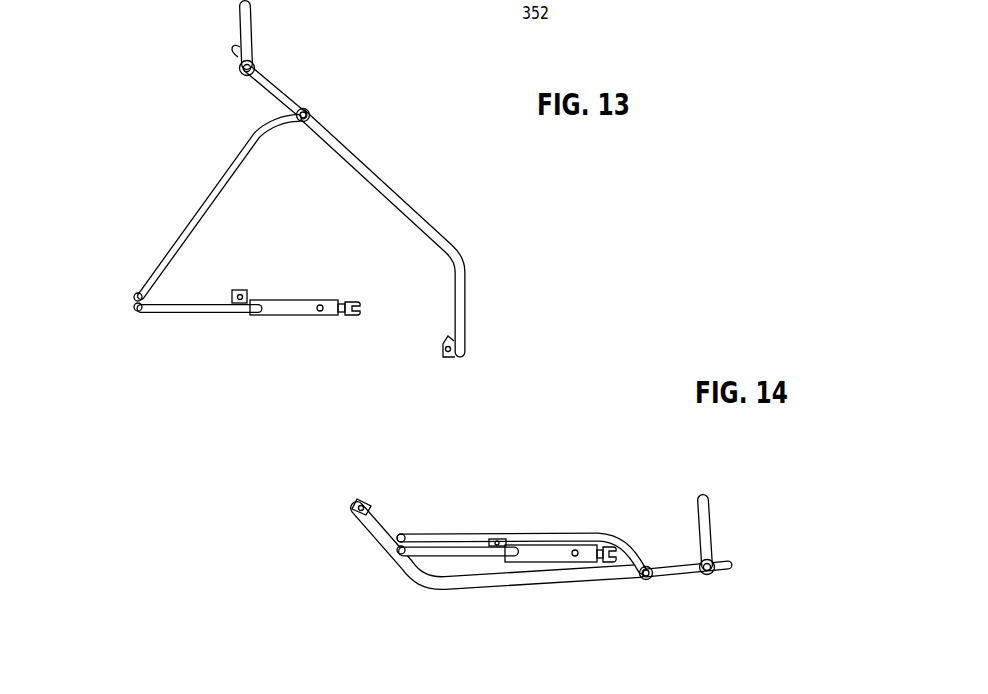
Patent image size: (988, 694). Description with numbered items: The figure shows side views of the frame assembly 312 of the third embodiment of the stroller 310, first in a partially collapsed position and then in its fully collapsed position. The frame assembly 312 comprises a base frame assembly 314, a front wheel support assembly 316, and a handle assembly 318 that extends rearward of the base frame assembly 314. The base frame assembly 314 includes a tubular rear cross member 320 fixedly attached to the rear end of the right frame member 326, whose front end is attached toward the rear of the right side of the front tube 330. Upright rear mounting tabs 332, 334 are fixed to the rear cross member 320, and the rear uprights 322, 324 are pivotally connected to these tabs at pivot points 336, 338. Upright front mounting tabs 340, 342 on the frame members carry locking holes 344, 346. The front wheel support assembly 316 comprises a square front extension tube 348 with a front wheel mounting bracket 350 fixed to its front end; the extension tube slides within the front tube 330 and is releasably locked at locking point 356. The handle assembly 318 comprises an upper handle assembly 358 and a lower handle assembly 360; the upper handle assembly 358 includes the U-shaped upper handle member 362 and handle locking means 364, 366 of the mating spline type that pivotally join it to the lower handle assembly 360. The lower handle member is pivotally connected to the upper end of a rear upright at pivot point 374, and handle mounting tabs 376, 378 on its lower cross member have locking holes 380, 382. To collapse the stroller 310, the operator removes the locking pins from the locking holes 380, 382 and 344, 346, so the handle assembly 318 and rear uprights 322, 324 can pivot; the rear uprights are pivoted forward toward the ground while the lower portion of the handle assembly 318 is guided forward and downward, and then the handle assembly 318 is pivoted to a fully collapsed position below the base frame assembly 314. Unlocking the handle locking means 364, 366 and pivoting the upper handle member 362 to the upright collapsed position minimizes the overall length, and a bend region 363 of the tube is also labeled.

In FIG. 13, the stroller 310 is at (553, 243).
In FIG. 13, the frame assembly 312 is at (401, 233).
In FIG. 14, the frame assembly 312 is at (498, 589).
In FIG. 13, the base frame assembly 314 is at (199, 375).
In FIG. 14, the base frame assembly 314 is at (475, 559).
In FIG. 14, the front wheel support assembly 316 is at (773, 512).
In FIG. 13, the handle assembly 318 is at (293, 90).
In FIG. 14, the handle assembly 318 is at (673, 583).
In FIG. 13, the rear cross member 320 is at (138, 311).
In FIG. 13, the rear upright 322 is at (219, 203).
In FIG. 14, the rear upright 322 is at (521, 526).
In FIG. 13, the rear upright 324 is at (233, 150).
In FIG. 14, the rear upright 324 is at (547, 536).
In FIG. 13, the right frame member 326 is at (163, 315).
In FIG. 13, the front tube 330 is at (308, 351).
In FIG. 13, the rear mounting tab 332 is at (128, 310).
In FIG. 14, the rear mounting tab 332 is at (445, 506).
In FIG. 13, the rear mounting tab 334 is at (128, 310).
In FIG. 14, the rear mounting tab 334 is at (445, 506).
In FIG. 13, the pivot point 336 is at (104, 363).
In FIG. 14, the pivot point 336 is at (445, 518).
In FIG. 13, the pivot point 338 is at (135, 298).
In FIG. 14, the pivot point 338 is at (405, 534).
In FIG. 13, the front mounting tab 340 is at (275, 316).
In FIG. 14, the front mounting tab 340 is at (546, 485).
In FIG. 13, the front mounting tab 342 is at (275, 316).
In FIG. 14, the front mounting tab 342 is at (546, 485).
In FIG. 13, the locking hole 344 is at (243, 306).
In FIG. 14, the locking hole 344 is at (528, 485).
In FIG. 14, the locking hole 346 is at (495, 541).
In FIG. 13, the front extension tube 348 is at (340, 318).
In FIG. 13, the front wheel mounting bracket 350 is at (350, 315).
In FIG. 13, the locking point 356 is at (319, 312).
In FIG. 13, the upper handle assembly 358 is at (265, 32).
In FIG. 14, the upper handle assembly 358 is at (759, 504).
In FIG. 13, the lower handle assembly 360 is at (392, 233).
In FIG. 14, the lower handle assembly 360 is at (498, 580).
In FIG. 13, the upper handle member 362 is at (243, 12).
In FIG. 14, the upper handle member 362 is at (705, 502).
In FIG. 13, the tube bend 363 is at (427, 217).
In FIG. 14, the tube bend 363 is at (423, 591).
In FIG. 13, the handle locking means 364 is at (184, 64).
In FIG. 14, the handle locking means 364 is at (767, 582).
In FIG. 13, the handle locking means 366 is at (238, 66).
In FIG. 14, the handle locking means 366 is at (717, 573).
In FIG. 13, the pivot point 374 is at (310, 115).
In FIG. 13, the handle mounting tab 376 is at (442, 375).
In FIG. 14, the handle mounting tab 376 is at (369, 478).
In FIG. 13, the handle mounting tab 378 is at (442, 375).
In FIG. 14, the handle mounting tab 378 is at (369, 478).
In FIG. 13, the locking hole 380 is at (477, 375).
In FIG. 14, the locking hole 380 is at (403, 478).
In FIG. 13, the locking hole 382 is at (444, 341).
In FIG. 14, the locking hole 382 is at (365, 502).